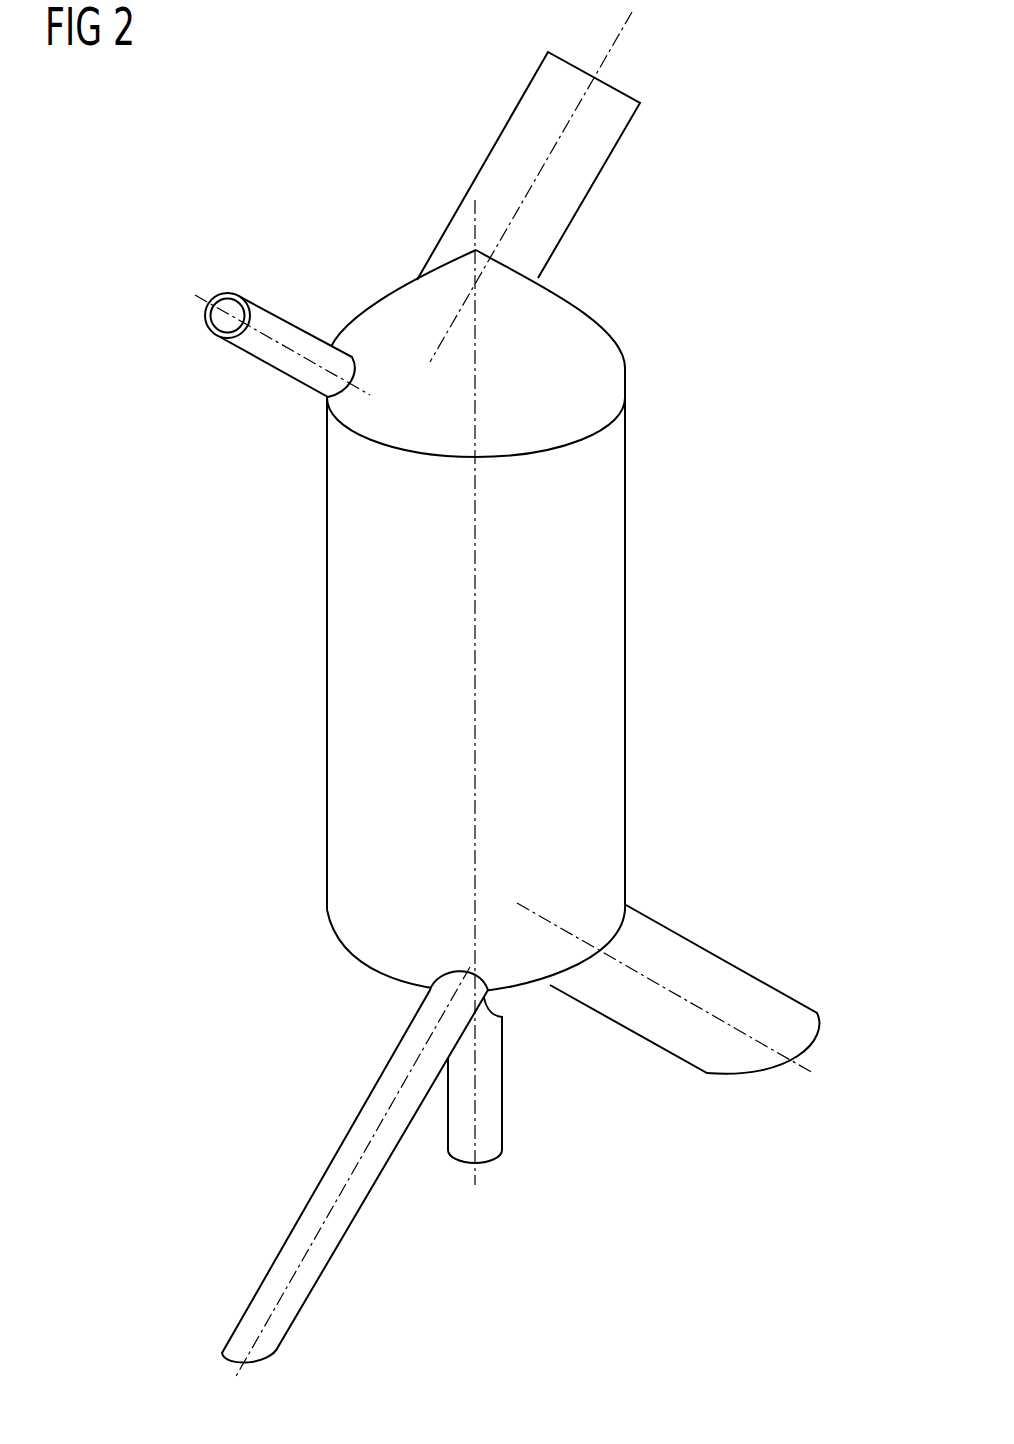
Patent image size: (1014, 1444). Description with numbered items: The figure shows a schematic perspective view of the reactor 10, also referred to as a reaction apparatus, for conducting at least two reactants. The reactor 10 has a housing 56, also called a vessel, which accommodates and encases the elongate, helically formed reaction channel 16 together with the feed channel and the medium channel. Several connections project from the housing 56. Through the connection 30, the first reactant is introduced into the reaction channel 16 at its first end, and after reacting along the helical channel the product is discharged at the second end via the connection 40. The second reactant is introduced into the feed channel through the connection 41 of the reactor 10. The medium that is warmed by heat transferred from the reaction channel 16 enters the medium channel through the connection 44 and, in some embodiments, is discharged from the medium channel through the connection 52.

The reactor 10 is at (328, 150).
The reaction channel 16 is at (228, 310).
The connection 30 is at (278, 1272).
The connection 40 is at (282, 332).
The connection 41 is at (492, 1105).
The connection 44 is at (725, 977).
The connection 52 is at (600, 150).
The housing 56 is at (615, 598).